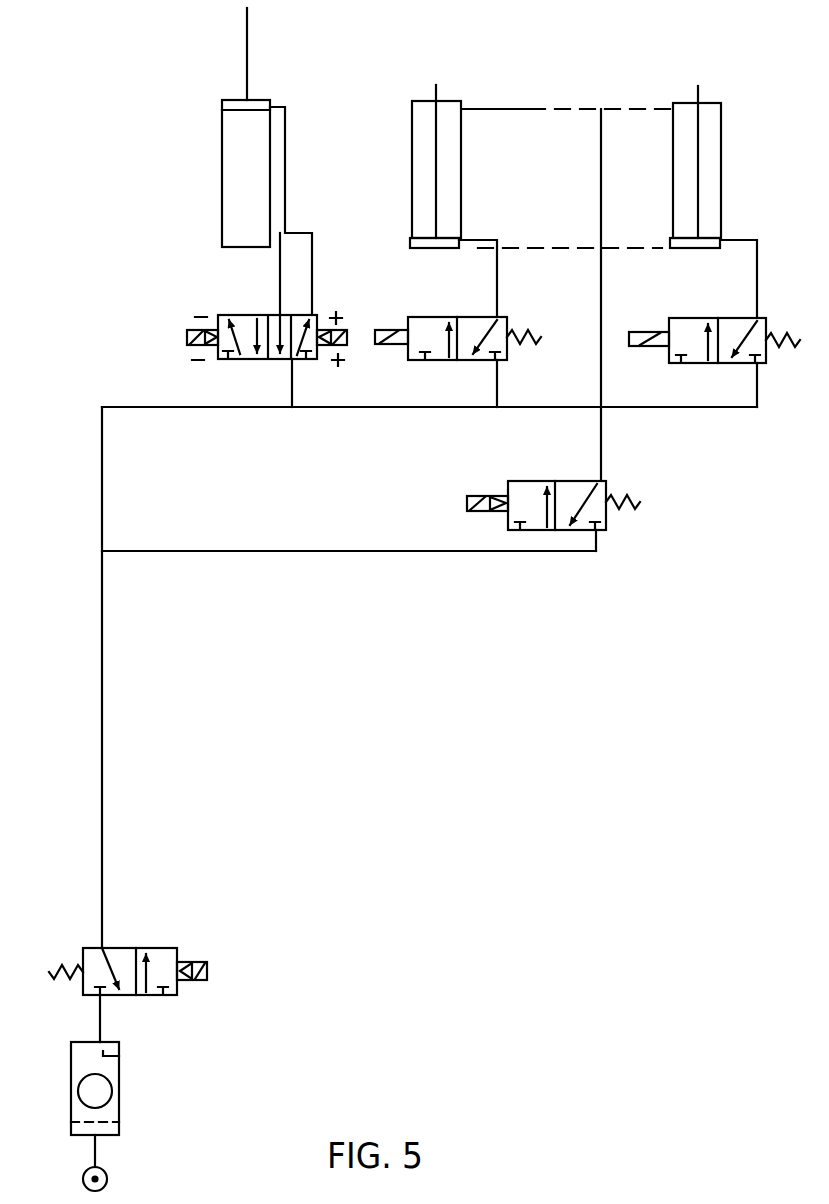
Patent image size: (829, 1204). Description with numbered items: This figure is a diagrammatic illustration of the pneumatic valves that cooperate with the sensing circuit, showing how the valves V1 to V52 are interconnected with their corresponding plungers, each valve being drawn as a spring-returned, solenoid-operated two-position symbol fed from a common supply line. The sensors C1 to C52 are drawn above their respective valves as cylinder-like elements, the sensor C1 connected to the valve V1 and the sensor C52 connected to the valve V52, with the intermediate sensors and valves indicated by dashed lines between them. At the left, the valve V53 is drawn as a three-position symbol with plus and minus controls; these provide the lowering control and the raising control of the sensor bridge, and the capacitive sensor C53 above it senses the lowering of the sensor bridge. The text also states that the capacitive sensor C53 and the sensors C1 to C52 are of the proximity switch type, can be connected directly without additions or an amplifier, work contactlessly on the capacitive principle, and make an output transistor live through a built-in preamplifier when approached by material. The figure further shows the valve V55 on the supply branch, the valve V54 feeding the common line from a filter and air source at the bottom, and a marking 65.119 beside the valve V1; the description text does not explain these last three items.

The capacitive sensor C53 is at (266, 161).
The sensor C1 is at (453, 201).
The sensor C52 is at (713, 202).
The valve V53 is at (267, 359).
The valve V1 is at (458, 348).
The valve V1 reference 65.119 is at (458, 348).
The valve V52 is at (714, 362).
The valve V55 is at (553, 330).
The valve V54 is at (128, 1055).